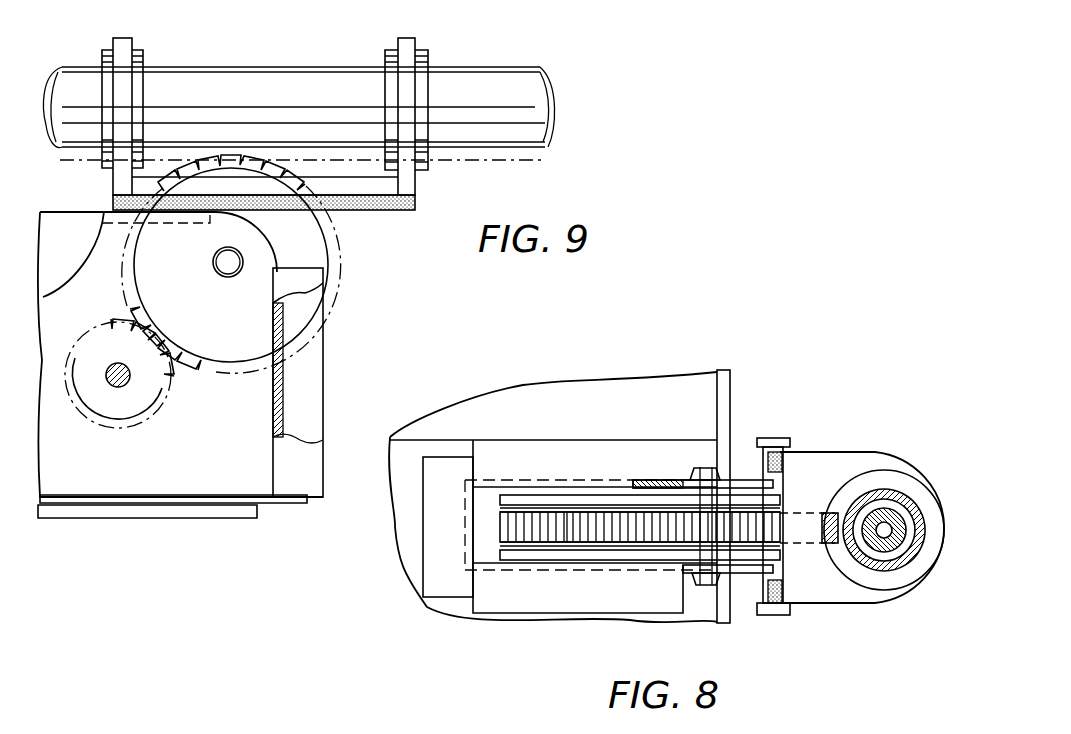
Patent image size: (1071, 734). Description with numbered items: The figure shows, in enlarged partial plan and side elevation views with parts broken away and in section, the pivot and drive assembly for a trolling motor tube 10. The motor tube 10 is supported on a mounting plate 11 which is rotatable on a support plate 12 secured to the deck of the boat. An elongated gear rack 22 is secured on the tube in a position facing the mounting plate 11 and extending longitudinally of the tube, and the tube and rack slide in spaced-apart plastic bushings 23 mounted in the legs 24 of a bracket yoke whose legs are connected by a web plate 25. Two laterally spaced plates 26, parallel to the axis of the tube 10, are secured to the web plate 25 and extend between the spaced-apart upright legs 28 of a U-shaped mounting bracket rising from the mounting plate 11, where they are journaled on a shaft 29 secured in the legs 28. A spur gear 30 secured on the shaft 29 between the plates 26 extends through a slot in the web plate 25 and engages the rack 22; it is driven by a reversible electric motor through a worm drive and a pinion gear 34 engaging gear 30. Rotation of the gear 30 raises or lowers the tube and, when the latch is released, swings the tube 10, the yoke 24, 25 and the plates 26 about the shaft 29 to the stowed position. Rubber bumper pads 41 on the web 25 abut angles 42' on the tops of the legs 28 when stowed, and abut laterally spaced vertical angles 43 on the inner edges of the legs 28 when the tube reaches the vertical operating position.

In FIG. 9, the motor tube 10 is at (252, 63).
In FIG. 8, the motor tube 10 is at (883, 478).
In FIG. 9, the mounting plate 11 is at (188, 495).
In FIG. 8, the mounting plate 11 is at (603, 380).
In FIG. 9, the support plate 12 is at (192, 514).
In FIG. 8, the gear rack 22 is at (830, 517).
In FIG. 9, the plastic bushings 23 is at (140, 60).
In FIG. 9, the legs 24 is at (123, 45).
In FIG. 8, the legs 24 is at (845, 595).
In FIG. 9, the web plate 25 is at (381, 190).
In FIG. 8, the plates 26 is at (528, 498).
In FIG. 9, the upright legs 28 is at (236, 432).
In FIG. 8, the upright legs 28 is at (663, 480).
In FIG. 9, the shaft 29 is at (236, 272).
In FIG. 8, the shaft 29 is at (703, 470).
In FIG. 9, the spur gear 30 is at (128, 292).
In FIG. 8, the spur gear 30 is at (677, 530).
In FIG. 9, the pinion gear 34 is at (150, 420).
In FIG. 8, the pinion gear 34 is at (508, 523).
In FIG. 8, the rubber bumper pads 41 is at (782, 460).
In FIG. 8, the housing 42' is at (553, 528).
In FIG. 9, the vertical angles 43 is at (307, 456).
In FIG. 8, the vertical angles 43 is at (777, 442).